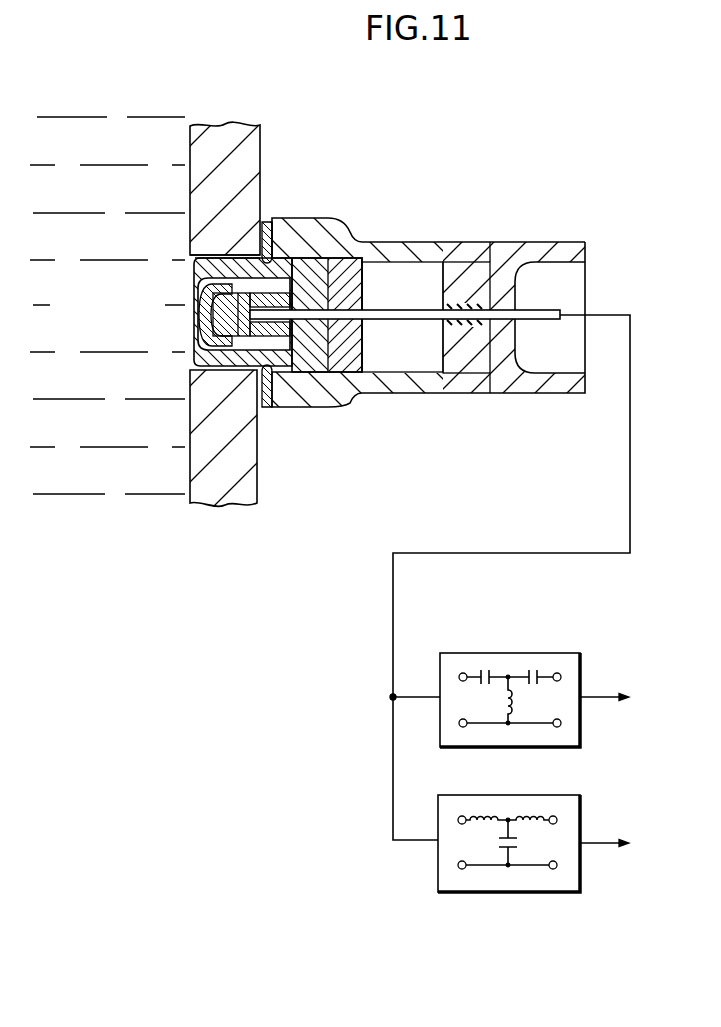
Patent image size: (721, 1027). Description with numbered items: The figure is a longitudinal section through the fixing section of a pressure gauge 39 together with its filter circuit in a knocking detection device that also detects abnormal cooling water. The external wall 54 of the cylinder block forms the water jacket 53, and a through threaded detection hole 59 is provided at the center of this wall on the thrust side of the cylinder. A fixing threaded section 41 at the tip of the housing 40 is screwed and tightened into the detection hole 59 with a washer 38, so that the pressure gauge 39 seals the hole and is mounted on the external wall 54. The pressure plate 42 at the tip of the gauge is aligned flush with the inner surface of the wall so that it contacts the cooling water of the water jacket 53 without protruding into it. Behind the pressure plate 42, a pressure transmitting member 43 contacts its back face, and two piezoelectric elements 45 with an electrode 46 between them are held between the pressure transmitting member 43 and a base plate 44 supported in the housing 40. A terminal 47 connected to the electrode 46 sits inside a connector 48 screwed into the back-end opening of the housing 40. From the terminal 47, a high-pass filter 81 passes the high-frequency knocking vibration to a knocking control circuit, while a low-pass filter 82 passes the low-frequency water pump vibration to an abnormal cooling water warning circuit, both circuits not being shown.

The washer 38 is at (343, 248).
The pressure gauge 39 is at (463, 241).
The housing 40 is at (360, 236).
The fixing threaded section 41 is at (272, 225).
The pressure plate 42 is at (198, 304).
The pressure transmitting member 43 is at (207, 320).
The base plate 44 is at (288, 330).
The piezoelectric elements 45 is at (273, 325).
The electrode 46 is at (228, 340).
The terminal 47 is at (560, 318).
The connector 48 is at (580, 242).
The water jacket 53 is at (151, 140).
The external wall 54 is at (262, 142).
The detection hole 59 is at (240, 265).
The high-pass filter 81 is at (572, 653).
The low-pass filter 82 is at (565, 797).